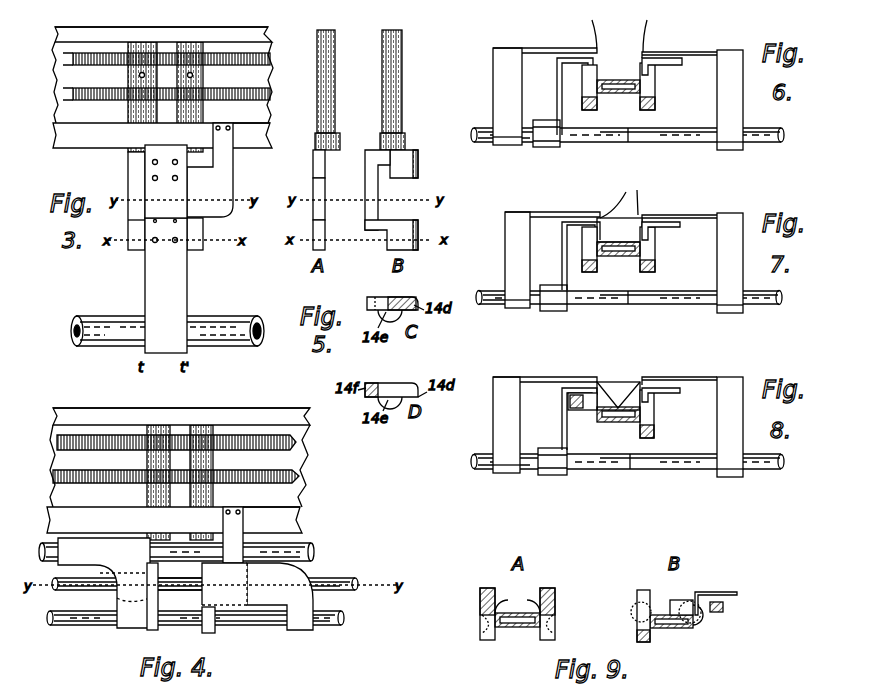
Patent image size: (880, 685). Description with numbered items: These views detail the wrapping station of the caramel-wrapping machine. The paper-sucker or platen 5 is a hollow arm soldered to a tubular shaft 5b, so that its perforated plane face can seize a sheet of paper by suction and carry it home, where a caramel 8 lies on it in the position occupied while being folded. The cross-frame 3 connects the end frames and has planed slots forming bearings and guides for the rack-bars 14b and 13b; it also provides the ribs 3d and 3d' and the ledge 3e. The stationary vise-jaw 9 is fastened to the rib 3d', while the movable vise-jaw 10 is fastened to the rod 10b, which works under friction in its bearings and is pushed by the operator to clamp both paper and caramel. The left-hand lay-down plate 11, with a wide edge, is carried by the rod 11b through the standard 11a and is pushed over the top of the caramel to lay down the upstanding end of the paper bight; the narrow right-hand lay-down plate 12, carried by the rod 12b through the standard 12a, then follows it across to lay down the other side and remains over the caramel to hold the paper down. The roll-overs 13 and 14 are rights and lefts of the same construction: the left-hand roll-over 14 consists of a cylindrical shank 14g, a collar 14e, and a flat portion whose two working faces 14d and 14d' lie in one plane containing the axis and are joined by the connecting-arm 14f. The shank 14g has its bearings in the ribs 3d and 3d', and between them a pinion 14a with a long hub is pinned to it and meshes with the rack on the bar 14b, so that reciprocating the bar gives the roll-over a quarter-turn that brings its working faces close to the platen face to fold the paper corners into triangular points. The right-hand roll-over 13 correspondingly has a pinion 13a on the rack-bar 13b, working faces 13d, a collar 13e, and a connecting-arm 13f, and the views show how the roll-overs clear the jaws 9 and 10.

In FIG. 3, the cross-frame 3 is at (162, 75).
In FIG. 4, the cross-frame 3 is at (180, 457).
In FIG. 3, the rib of the cross-frame 3d is at (161, 35).
In FIG. 4, the rib of the cross-frame 3d is at (181, 416).
In FIG. 3, the rib of the cross-frame 3d' is at (251, 128).
In FIG. 4, the rib of the cross-frame 3d' is at (271, 512).
In FIG. 3, the ledge of the cross-frame 3e is at (162, 135).
In FIG. 4, the ledge of the cross-frame 3e is at (174, 520).
In FIG. 3, the paper-sucker or platen 5 is at (166, 285).
In FIG. 6, the paper-sucker or platen 5 is at (625, 94).
In FIG. 7, the paper-sucker or platen 5 is at (625, 257).
In FIG. 8, the paper-sucker or platen 5 is at (626, 422).
In FIG. 9, the paper-sucker or platen 5 is at (522, 628).
In FIG. 3, the tubular shaft 5b is at (125, 318).
In FIG. 3, the caramel 8 is at (166, 181).
In FIG. 7, the caramel 8 is at (619, 216).
In FIG. 8, the caramel 8 is at (618, 396).
In FIG. 3, the stationary vise-jaw 9 is at (210, 170).
In FIG. 6, the stationary vise-jaw 9 is at (680, 66).
In FIG. 7, the stationary vise-jaw 9 is at (678, 228).
In FIG. 8, the stationary vise-jaw 9 is at (680, 392).
In FIG. 4, the stationary vise-jaw 9 is at (185, 598).
In FIG. 9, the stationary vise-jaw 9 is at (718, 592).
In FIG. 6, the movable vise-jaw 10 is at (557, 92).
In FIG. 7, the movable vise-jaw 10 is at (562, 251).
In FIG. 8, the movable vise-jaw 10 is at (562, 428).
In FIG. 4, the movable vise-jaw 10 is at (160, 568).
In FIG. 6, the actuating-rod for movable vise-jaw 10b is at (533, 127).
In FIG. 7, the actuating-rod for movable vise-jaw 10b is at (540, 300).
In FIG. 8, the actuating-rod for movable vise-jaw 10b is at (535, 465).
In FIG. 4, the actuating-rod for movable vise-jaw 10b is at (315, 586).
In FIG. 6, the left-hand lay-down plate 11 is at (558, 50).
In FIG. 7, the left-hand lay-down plate 11 is at (568, 213).
In FIG. 8, the left-hand lay-down plate 11 is at (568, 378).
In FIG. 4, the left-hand lay-down plate 11 is at (104, 583).
In FIG. 6, the standard 11a is at (508, 96).
In FIG. 7, the standard 11a is at (519, 260).
In FIG. 8, the standard 11a is at (508, 425).
In FIG. 6, the actuating-rod for left-hand lay-down 11b is at (487, 128).
In FIG. 7, the actuating-rod for left-hand lay-down 11b is at (497, 292).
In FIG. 8, the actuating-rod for left-hand lay-down 11b is at (487, 455).
In FIG. 4, the actuating-rod for left-hand lay-down 11b is at (312, 552).
In FIG. 6, the right-hand lay-down plate 12 is at (677, 52).
In FIG. 7, the right-hand lay-down plate 12 is at (677, 215).
In FIG. 8, the right-hand lay-down plate 12 is at (677, 378).
In FIG. 4, the right-hand lay-down plate 12 is at (257, 596).
In FIG. 6, the standard 12a is at (732, 100).
In FIG. 7, the standard 12a is at (731, 263).
In FIG. 8, the standard 12a is at (731, 427).
In FIG. 6, the actuating-rod for right-hand lay-down 12b is at (630, 138).
In FIG. 7, the actuating-rod for right-hand lay-down 12b is at (628, 304).
In FIG. 8, the actuating-rod for right-hand lay-down 12b is at (630, 469).
In FIG. 4, the actuating-rod for right-hand lay-down 12b is at (342, 618).
In FIG. 3, the right-hand roll-over 13 is at (200, 245).
In FIG. 6, the right-hand roll-over 13 is at (655, 83).
In FIG. 7, the right-hand roll-over 13 is at (655, 249).
In FIG. 8, the right-hand roll-over 13 is at (654, 406).
In FIG. 4, the right-hand roll-over 13 is at (215, 630).
In FIG. 9, the right-hand roll-over 13 is at (552, 590).
In FIG. 3, the pinion of right-hand roll-over 13a is at (200, 110).
In FIG. 4, the pinion of right-hand roll-over 13a is at (201, 482).
In FIG. 3, the rack-bar for right-hand roll-over 13b is at (270, 92).
In FIG. 4, the rack-bar for right-hand roll-over 13b is at (299, 476).
In FIG. 9, the working face of right-hand roll-over 13d is at (674, 604).
In FIG. 9, the collar of right-hand roll-over 13e is at (703, 625).
In FIG. 9, the connecting-arm of right-hand roll-over 13f is at (723, 608).
In FIG. 3, the left-hand roll-over 14 is at (130, 168).
In FIG. 6, the left-hand roll-over 14 is at (584, 85).
In FIG. 7, the left-hand roll-over 14 is at (589, 249).
In FIG. 8, the left-hand roll-over 14 is at (586, 410).
In FIG. 4, the left-hand roll-over 14 is at (150, 632).
In FIG. 9, the left-hand roll-over 14 is at (482, 590).
In FIG. 3, the pinion of left-hand roll-over 14a is at (135, 110).
In FIG. 4, the pinion of left-hand roll-over 14a is at (158, 482).
In FIG. 3, the rack-bar for left-hand roll-over 14b is at (270, 58).
In FIG. 4, the rack-bar for left-hand roll-over 14b is at (296, 442).
In FIG. 5, the working face of left-hand roll-over 14d is at (386, 164).
In FIG. 9, the working face of left-hand roll-over 14d is at (636, 603).
In FIG. 5, the working face of left-hand roll-over 14d' is at (396, 229).
In FIG. 5, the collar of left-hand roll-over 14e is at (382, 142).
In FIG. 9, the collar of left-hand roll-over 14e is at (517, 595).
In FIG. 5, the connecting-arm of left-hand roll-over 14f is at (378, 182).
In FIG. 9, the connecting-arm of left-hand roll-over 14f is at (637, 634).
In FIG. 5, the cylindrical shank of left-hand roll-over 14g is at (390, 45).